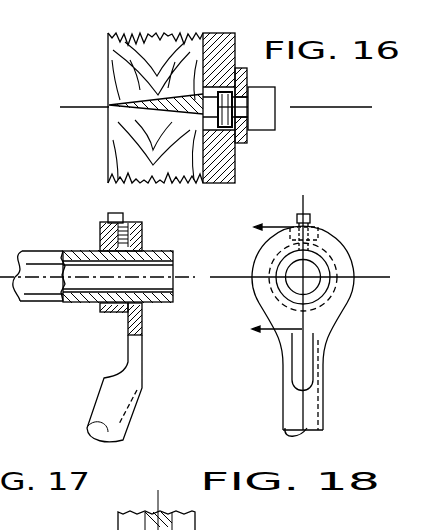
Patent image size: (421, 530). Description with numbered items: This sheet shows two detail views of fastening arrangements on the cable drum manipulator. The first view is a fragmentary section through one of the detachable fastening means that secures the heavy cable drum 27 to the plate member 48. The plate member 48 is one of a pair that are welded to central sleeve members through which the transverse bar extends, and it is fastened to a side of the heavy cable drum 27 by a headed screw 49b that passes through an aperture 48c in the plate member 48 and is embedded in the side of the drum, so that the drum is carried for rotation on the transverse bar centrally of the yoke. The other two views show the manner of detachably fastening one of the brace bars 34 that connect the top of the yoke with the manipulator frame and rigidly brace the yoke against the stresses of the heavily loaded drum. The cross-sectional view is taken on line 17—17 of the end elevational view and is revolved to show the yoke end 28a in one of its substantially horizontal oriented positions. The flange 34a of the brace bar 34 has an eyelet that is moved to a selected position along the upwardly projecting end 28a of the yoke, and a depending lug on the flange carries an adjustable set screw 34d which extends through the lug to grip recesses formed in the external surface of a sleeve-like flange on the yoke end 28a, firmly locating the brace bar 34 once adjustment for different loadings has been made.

In FIG. 16, the heavy cable drum 27 is at (120, 70).
In FIG. 16, the headed screw 49b is at (150, 112).
In FIG. 16, the plate member 48 is at (228, 166).
In FIG. 16, the aperture 48c is at (238, 133).
In FIG. 17, the upwardly projecting end of the yoke 28a is at (48, 288).
In FIG. 18, the upwardly projecting end of the yoke 28a is at (318, 293).
In FIG. 17, the brace bar 34 is at (100, 237).
In FIG. 18, the brace bar 34 is at (312, 420).
In FIG. 17, the adjustable set screw 34d is at (118, 217).
In FIG. 18, the adjustable set screw 34d is at (309, 219).
In FIG. 17, the flange of the brace bar 34a is at (138, 326).
In FIG. 18, the flange of the brace bar 34a is at (317, 322).
In FIG. 18, the section line 17 is at (260, 281).